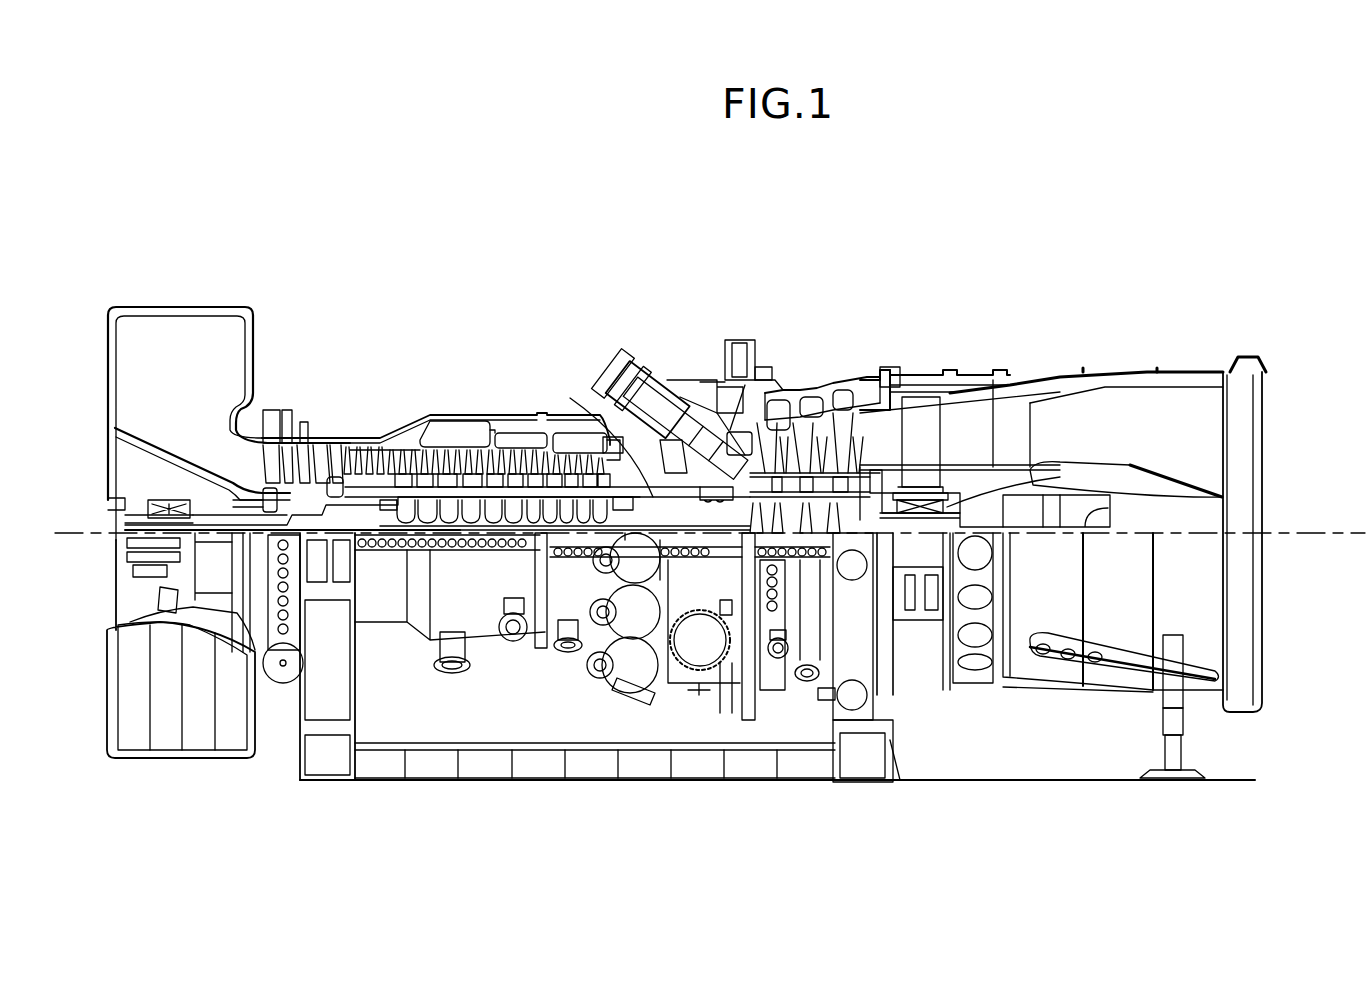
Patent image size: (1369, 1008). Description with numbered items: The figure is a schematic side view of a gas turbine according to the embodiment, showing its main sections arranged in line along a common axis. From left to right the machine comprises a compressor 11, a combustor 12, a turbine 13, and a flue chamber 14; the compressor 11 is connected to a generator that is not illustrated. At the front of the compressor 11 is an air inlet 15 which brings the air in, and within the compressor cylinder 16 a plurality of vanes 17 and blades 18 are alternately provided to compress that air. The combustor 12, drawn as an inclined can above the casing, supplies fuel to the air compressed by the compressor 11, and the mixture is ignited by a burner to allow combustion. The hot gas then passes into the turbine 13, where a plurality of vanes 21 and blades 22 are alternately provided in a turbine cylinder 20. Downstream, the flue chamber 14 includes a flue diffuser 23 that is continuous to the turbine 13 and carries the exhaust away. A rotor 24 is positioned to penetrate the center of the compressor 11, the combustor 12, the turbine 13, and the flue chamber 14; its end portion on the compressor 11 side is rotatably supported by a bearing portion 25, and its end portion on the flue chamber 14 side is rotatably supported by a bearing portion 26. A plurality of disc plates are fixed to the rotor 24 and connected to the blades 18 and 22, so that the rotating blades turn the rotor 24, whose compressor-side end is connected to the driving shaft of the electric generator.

The compressor 11 is at (506, 388).
The combustor 12 is at (630, 347).
The turbine 13 is at (961, 397).
The flue chamber 14 is at (1112, 370).
The air inlet 15 is at (123, 370).
The compressor cylinder 16 is at (380, 440).
The vanes 17 is at (352, 398).
The blades 18 is at (425, 428).
The turbine cylinder 20 is at (813, 392).
The vanes 21 is at (783, 392).
The blades 22 is at (747, 388).
The flue diffuser 23 is at (893, 362).
The rotor 24 is at (652, 505).
The bearing portion 25 is at (120, 512).
The bearing portion 26 is at (1258, 478).